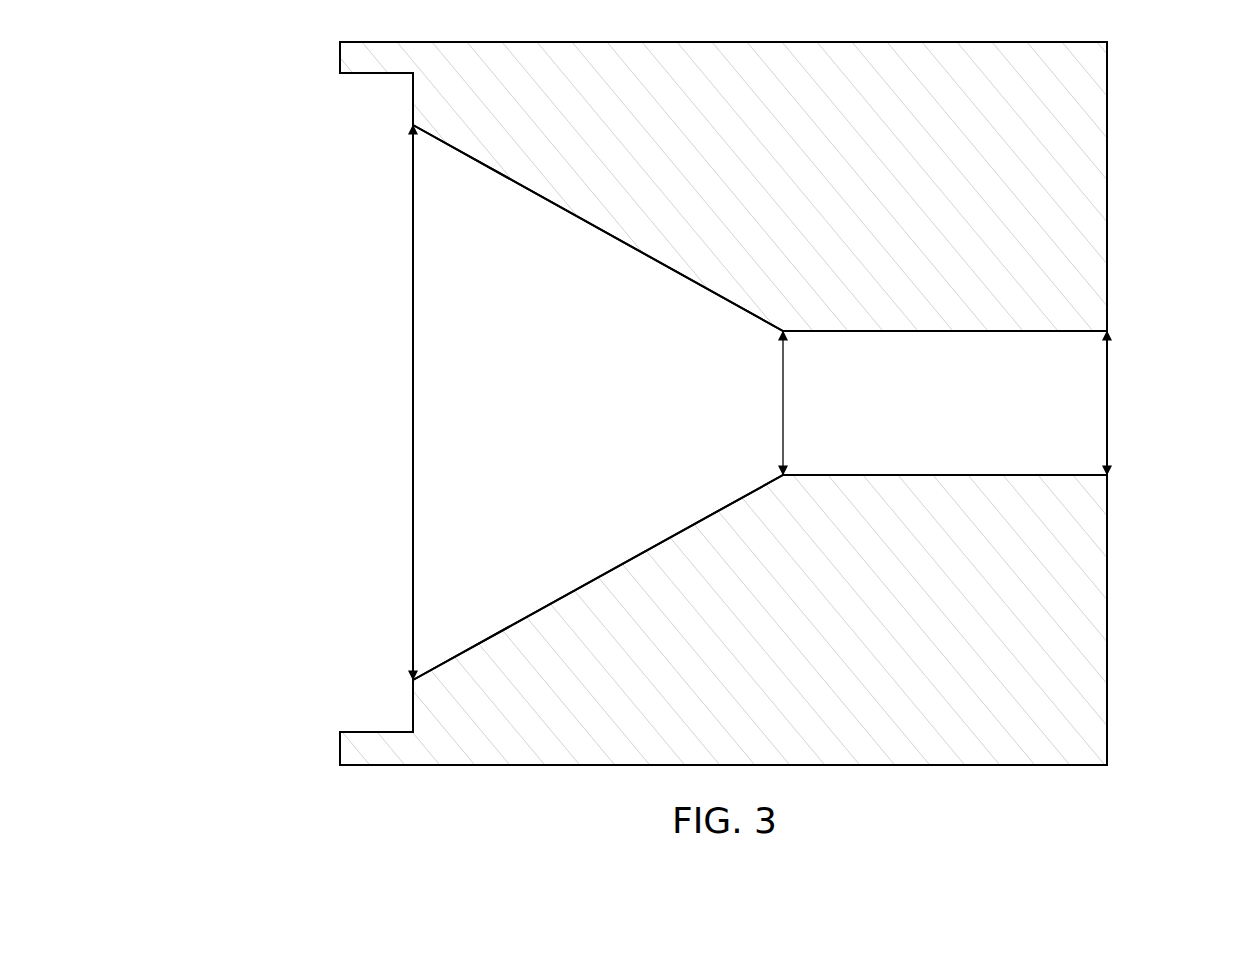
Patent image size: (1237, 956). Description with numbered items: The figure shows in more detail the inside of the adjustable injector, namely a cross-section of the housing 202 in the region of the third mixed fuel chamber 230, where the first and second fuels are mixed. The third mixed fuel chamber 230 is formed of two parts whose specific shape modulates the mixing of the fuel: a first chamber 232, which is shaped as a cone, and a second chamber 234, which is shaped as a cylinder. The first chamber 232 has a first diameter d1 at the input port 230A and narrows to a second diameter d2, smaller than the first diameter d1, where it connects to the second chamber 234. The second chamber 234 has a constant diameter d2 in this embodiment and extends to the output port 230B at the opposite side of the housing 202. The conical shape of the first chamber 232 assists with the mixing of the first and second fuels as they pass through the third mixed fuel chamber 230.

The housing 202 is at (845, 666).
The third mixed fuel chamber 230 is at (240, 40).
The first chamber 232 is at (557, 504).
The second chamber 234 is at (982, 417).
The input port 230A is at (402, 404).
The output port 230B is at (1118, 378).
The first diameter d1 is at (414, 403).
The second diameter d2 is at (785, 403).